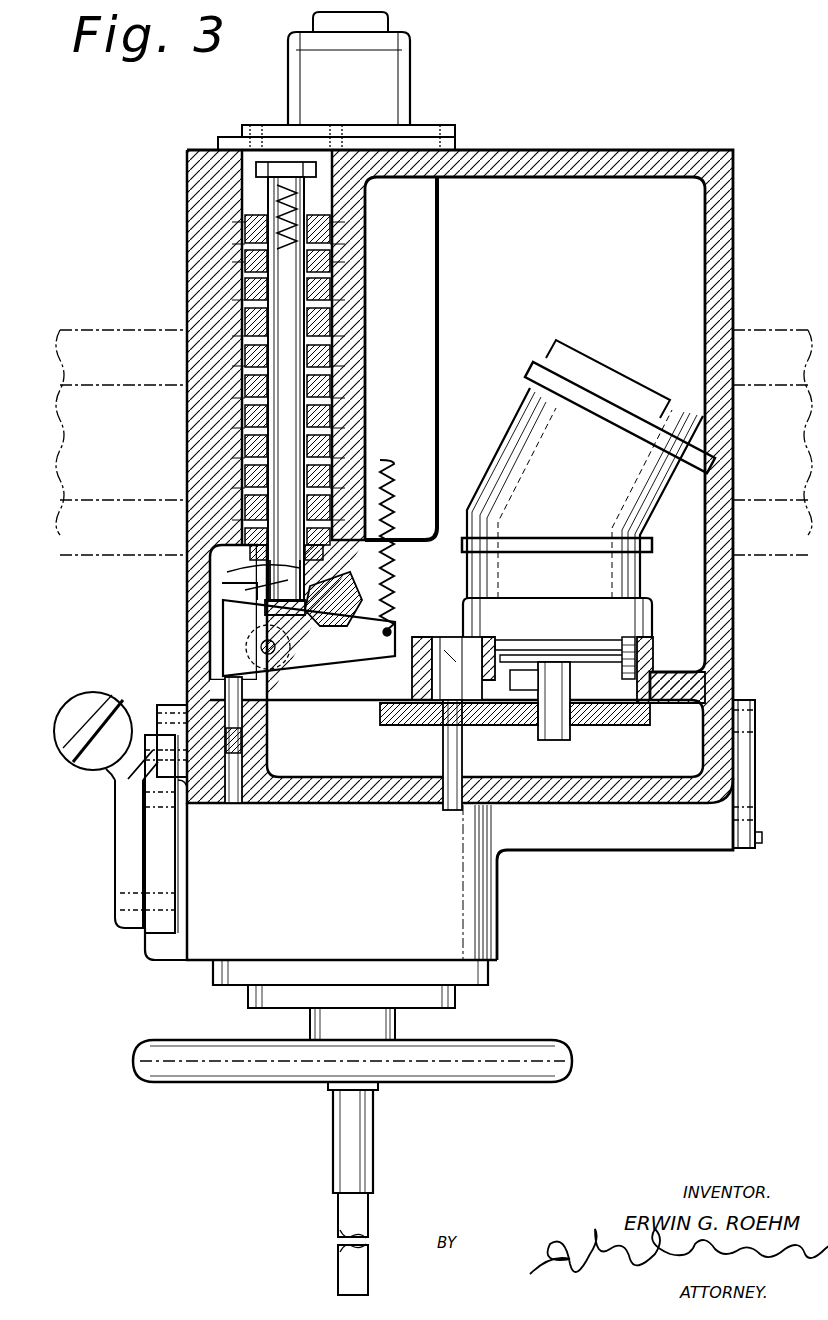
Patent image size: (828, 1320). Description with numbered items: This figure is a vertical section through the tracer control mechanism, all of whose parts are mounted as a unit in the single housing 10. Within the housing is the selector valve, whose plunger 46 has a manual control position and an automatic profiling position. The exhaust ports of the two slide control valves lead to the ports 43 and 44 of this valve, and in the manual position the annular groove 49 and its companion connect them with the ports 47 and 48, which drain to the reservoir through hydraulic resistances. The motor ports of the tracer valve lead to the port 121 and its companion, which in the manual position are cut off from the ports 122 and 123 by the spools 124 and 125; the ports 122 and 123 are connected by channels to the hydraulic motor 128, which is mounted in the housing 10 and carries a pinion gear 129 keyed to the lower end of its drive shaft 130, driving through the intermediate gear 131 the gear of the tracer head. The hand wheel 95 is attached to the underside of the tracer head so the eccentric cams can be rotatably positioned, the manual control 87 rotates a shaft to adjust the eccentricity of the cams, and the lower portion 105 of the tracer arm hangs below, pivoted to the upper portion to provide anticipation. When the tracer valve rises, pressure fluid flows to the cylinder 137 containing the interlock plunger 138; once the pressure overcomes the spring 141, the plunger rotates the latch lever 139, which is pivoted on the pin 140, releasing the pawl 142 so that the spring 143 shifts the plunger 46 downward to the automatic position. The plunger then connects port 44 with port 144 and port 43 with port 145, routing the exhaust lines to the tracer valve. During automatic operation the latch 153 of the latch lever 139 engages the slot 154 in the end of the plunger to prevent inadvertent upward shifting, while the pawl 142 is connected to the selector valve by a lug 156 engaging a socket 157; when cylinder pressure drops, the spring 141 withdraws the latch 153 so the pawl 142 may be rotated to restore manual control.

The housing 10 is at (712, 215).
The port 43 is at (325, 403).
The port 44 is at (245, 508).
The plunger 46 is at (330, 199).
The port 47 is at (325, 425).
The port 48 is at (245, 528).
The annular groove 49 is at (280, 420).
The manual control 87 is at (98, 765).
The hand wheel 95 is at (135, 1057).
The lower portion of the tracer arm 105 is at (350, 1158).
The port 121 is at (325, 282).
The port 122 is at (325, 305).
The port 123 is at (325, 247).
The spool 124 is at (290, 346).
The spool 125 is at (285, 264).
The hydraulic motor 128 is at (520, 422).
The pinion gear 129 is at (592, 725).
The drive shaft 130 is at (558, 740).
The intermediate gear 131 is at (408, 735).
The cylinder 137 is at (240, 744).
The interlock plunger 138 is at (240, 722).
The latch lever 139 is at (360, 660).
The pin 140 is at (272, 656).
The spring 141 is at (397, 563).
The pawl 142 is at (347, 590).
The spring 143 is at (292, 160).
The port 144 is at (245, 470).
The port 145 is at (325, 381).
The latch 153 is at (240, 588).
The slot 154 is at (240, 582).
The lug 156 is at (295, 612).
The socket 157 is at (286, 583).